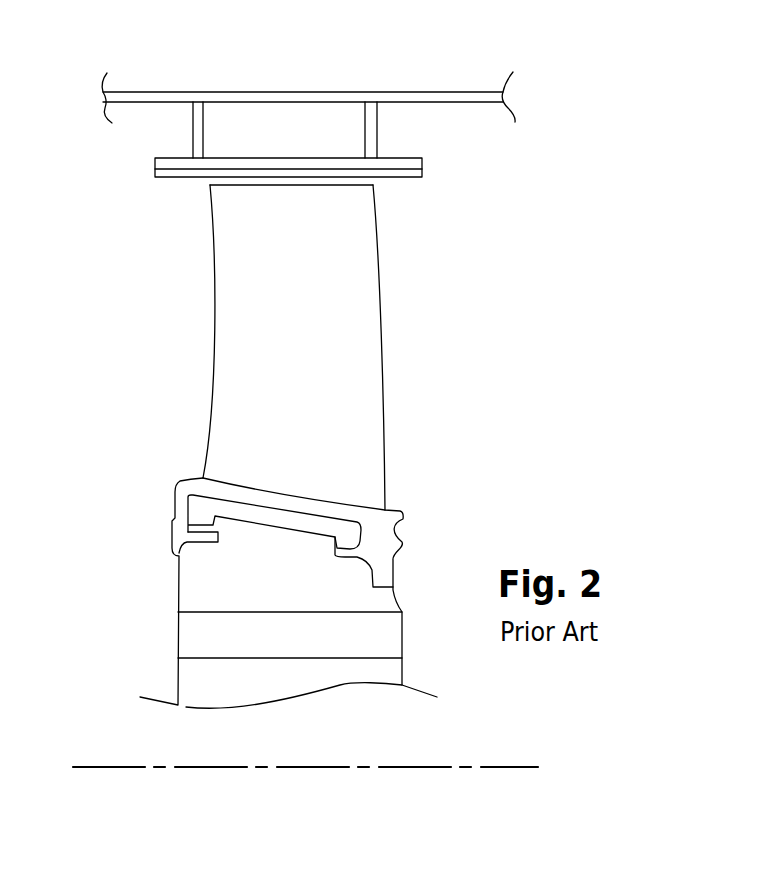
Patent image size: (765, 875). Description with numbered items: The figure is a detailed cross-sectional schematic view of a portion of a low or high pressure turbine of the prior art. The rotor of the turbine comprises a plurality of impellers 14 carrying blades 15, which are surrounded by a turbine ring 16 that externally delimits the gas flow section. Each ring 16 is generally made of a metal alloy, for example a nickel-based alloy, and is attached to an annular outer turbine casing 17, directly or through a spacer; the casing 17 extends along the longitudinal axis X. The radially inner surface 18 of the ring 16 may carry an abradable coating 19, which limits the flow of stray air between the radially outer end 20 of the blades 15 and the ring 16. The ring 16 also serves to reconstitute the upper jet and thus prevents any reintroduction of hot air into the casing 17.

The impellers 14 is at (137, 555).
The blades 15 is at (307, 352).
The turbine ring 16 is at (394, 163).
The annular outer turbine casing 17 is at (433, 92).
The radially inner surface 18 is at (178, 168).
The abradable coating 19 is at (408, 177).
The radially outer end 20 is at (253, 185).
The longitudinal axis X is at (493, 767).